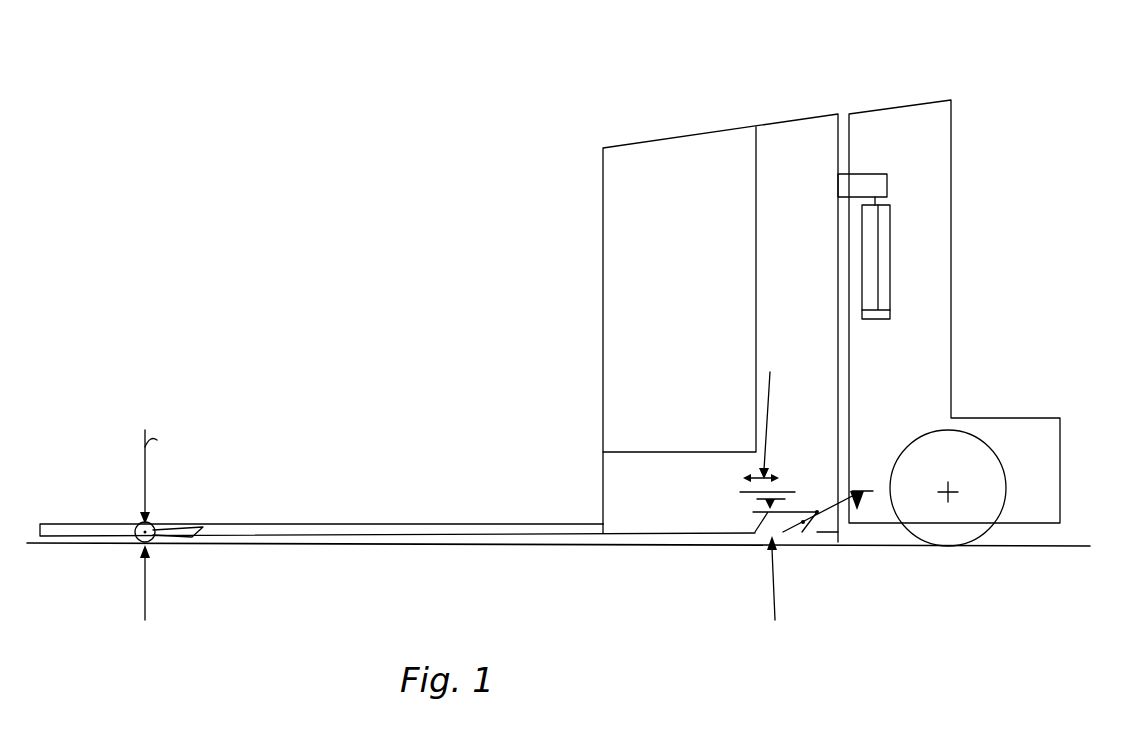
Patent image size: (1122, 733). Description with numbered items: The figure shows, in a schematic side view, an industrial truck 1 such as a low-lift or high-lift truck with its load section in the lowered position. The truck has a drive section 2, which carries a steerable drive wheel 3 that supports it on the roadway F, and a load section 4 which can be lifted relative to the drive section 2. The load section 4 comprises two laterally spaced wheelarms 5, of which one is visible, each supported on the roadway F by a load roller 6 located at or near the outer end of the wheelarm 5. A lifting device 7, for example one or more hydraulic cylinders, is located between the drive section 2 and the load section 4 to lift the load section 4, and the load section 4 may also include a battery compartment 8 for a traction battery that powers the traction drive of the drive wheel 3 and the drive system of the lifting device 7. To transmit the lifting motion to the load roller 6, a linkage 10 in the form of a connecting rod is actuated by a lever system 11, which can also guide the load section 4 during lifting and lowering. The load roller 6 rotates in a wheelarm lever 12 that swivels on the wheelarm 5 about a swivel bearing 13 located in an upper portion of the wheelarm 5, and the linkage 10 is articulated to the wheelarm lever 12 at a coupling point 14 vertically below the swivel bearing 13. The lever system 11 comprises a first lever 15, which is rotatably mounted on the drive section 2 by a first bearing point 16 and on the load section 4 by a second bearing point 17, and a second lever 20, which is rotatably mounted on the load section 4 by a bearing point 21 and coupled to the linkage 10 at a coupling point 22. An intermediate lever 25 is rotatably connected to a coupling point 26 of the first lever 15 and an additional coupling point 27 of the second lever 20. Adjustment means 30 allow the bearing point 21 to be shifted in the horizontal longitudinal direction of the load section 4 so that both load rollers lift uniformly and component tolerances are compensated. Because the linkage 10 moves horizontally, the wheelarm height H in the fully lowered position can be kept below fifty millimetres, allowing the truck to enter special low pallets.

The industrial truck 1 is at (541, 114).
The drive section 2 is at (942, 298).
The drive wheel 3 is at (952, 548).
The load section 4 is at (790, 145).
The wheelarm 5 is at (50, 523).
The load roller 6 is at (138, 540).
The lifting device 7 is at (890, 245).
The battery compartment 8 is at (627, 443).
The linkage 10 is at (677, 533).
The lever system 11 is at (783, 597).
The wheelarm lever 12 is at (182, 527).
The swivel bearing 13 is at (203, 527).
The coupling point 14 is at (192, 537).
The first lever 15 is at (825, 523).
The first bearing point 16 is at (857, 510).
The second bearing point 17 is at (800, 533).
The second lever 20 is at (765, 513).
The bearing point 21 is at (768, 509).
The coupling point 22 is at (755, 532).
The intermediate lever 25 is at (802, 520).
The coupling point 26 is at (785, 533).
The additional coupling point 27 is at (817, 512).
The adjustment means 30 is at (774, 409).
The wheelarm height H is at (161, 508).
The roadway F is at (1028, 545).